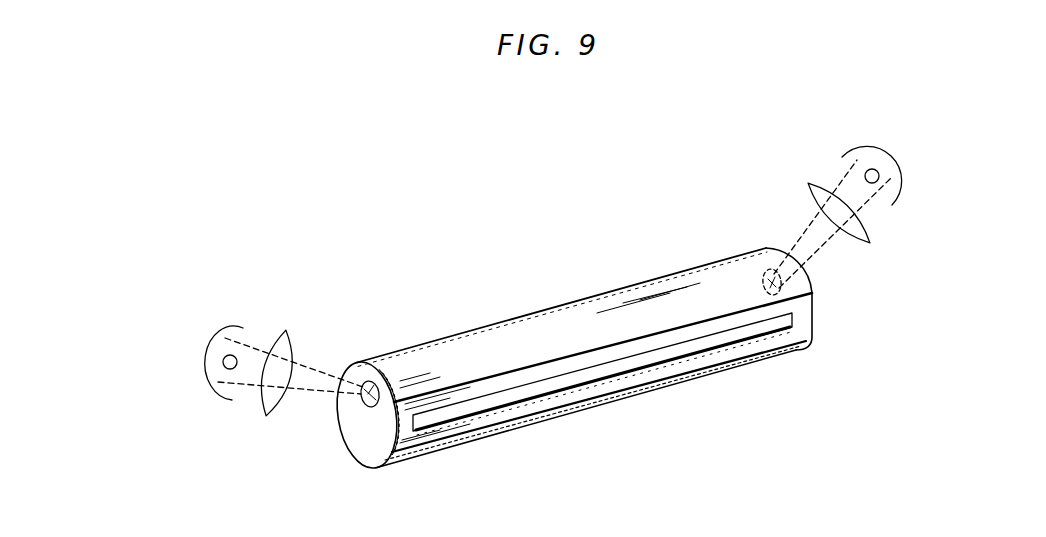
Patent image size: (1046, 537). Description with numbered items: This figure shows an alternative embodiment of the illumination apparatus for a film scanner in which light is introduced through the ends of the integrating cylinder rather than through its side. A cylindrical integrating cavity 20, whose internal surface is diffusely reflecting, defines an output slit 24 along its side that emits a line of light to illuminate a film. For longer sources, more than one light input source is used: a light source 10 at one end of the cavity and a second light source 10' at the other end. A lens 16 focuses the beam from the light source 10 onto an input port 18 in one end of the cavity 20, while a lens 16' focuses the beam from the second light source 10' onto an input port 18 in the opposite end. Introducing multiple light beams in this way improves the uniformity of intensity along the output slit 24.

The light source 10 is at (209, 350).
The lens 16 is at (291, 360).
The input port 18 is at (366, 407).
The cylindrical integrating cavity 20 is at (800, 283).
The output slit 24 is at (775, 326).
The light input source 10' is at (882, 153).
The lens 16' is at (858, 221).